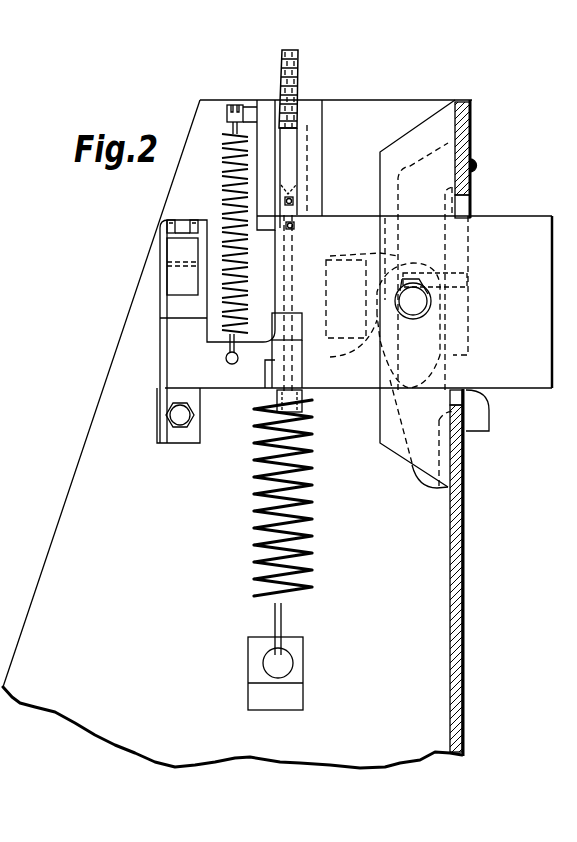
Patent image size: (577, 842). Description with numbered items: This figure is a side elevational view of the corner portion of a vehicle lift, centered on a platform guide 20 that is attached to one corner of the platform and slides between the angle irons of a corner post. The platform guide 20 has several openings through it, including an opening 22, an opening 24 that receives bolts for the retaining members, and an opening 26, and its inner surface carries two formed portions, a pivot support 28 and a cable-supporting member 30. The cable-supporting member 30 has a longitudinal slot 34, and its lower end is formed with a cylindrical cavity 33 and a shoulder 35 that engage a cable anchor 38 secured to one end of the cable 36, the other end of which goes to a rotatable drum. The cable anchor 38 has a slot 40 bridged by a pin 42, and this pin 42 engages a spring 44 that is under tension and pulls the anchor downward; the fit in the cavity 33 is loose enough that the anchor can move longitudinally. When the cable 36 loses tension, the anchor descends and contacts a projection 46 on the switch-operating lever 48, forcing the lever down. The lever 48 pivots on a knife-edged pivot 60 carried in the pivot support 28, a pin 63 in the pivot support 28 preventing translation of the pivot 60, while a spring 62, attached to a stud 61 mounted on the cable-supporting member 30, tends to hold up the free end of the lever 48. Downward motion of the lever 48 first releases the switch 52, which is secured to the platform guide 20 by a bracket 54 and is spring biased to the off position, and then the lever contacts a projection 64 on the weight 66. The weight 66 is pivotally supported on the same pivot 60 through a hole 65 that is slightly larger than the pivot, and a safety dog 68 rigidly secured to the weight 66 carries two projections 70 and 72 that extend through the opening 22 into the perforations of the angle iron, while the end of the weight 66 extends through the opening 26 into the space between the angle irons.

The platform guide 20 is at (83, 542).
The opening 22 is at (472, 145).
The opening 24 is at (467, 429).
The opening 26 is at (461, 209).
The pivot support 28 is at (422, 137).
The cable-supporting member 30 is at (312, 115).
The cylindrical cavity 33 is at (307, 152).
The longitudinal slot 34 is at (297, 150).
The shoulder 35 is at (299, 126).
The cable 36 is at (302, 73).
The cable anchor 38 is at (572, 131).
The slot 40 is at (293, 197).
The pin 42 is at (294, 202).
The spring 44 is at (307, 515).
The projection 46 is at (299, 315).
The switch-operating lever 48 is at (230, 386).
The switch 52 is at (180, 252).
The bracket 54 is at (163, 428).
The knife-edged pivot 60 is at (420, 300).
The stud 61 is at (229, 115).
The spring 62 is at (222, 177).
The pin 63 is at (468, 282).
The projection 64 is at (297, 413).
The hole 65 is at (432, 309).
The weight 66 is at (532, 360).
The safety dog 68 is at (407, 236).
The projection 70 is at (476, 165).
The projection 72 is at (481, 413).